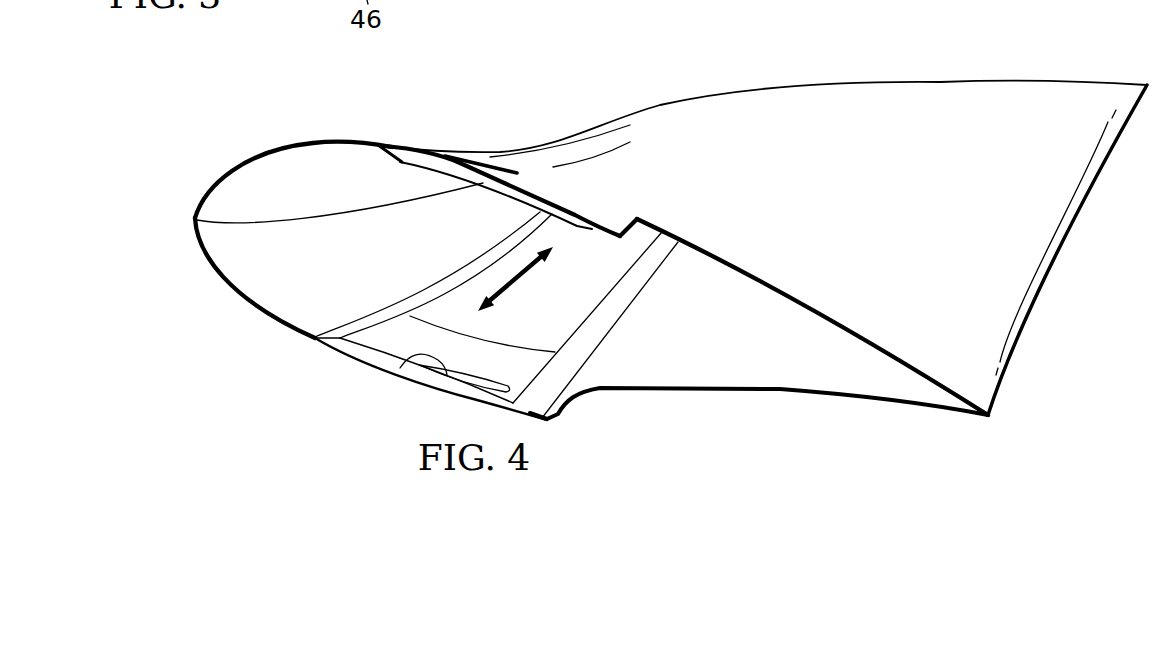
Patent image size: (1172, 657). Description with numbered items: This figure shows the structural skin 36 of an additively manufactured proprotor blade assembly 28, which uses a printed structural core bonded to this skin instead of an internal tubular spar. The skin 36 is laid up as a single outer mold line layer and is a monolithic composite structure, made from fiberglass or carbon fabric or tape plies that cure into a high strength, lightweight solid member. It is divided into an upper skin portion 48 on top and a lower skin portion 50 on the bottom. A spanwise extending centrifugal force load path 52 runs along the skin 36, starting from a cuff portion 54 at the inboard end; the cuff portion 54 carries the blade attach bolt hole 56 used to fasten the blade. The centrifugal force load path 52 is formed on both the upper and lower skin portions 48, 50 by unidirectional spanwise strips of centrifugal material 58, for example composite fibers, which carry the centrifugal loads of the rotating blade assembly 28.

The proprotor blade assembly 28 is at (693, 67).
The structural skin 36 is at (1021, 69).
The upper skin portion 48 is at (843, 118).
The lower skin portion 50 is at (861, 397).
The centrifugal force load path 52 is at (520, 279).
The cuff portion 54 is at (587, 416).
The blade attach bolt hole 56 is at (418, 366).
The strips of centrifugal material 58 is at (414, 176).